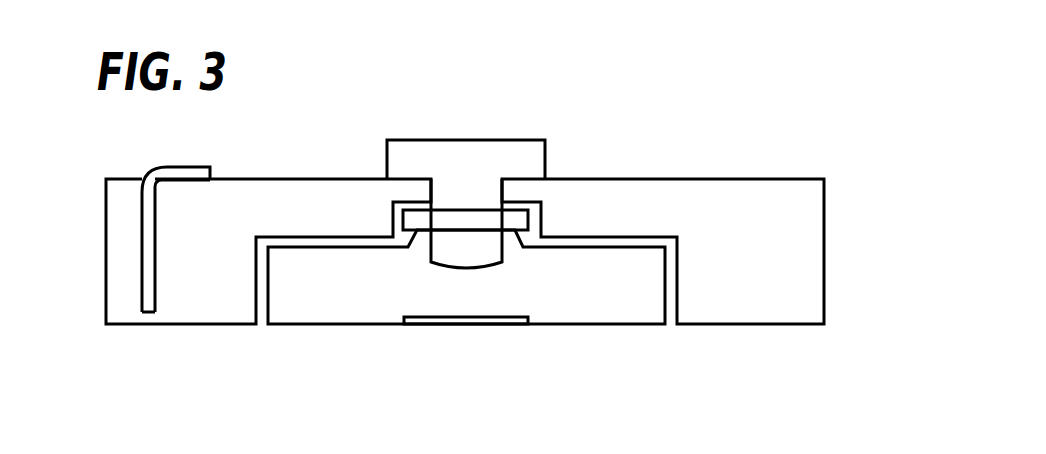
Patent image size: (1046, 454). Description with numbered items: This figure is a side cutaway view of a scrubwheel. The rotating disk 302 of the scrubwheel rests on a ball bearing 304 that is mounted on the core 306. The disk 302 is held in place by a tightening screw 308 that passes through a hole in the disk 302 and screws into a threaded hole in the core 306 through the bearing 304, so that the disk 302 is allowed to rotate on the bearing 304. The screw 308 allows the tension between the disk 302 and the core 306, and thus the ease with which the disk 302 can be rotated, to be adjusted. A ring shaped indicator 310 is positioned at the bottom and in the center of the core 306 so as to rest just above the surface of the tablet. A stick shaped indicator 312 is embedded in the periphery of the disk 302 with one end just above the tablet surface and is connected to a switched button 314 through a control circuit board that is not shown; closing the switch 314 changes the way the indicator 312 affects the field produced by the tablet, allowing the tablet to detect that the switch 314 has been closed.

The rotating disk 302 is at (785, 232).
The ball bearing 304 is at (422, 217).
The core 306 is at (608, 303).
The tightening screw 308 is at (523, 160).
The ring shaped indicator 310 is at (413, 324).
The stick shaped indicator 312 is at (145, 262).
The switched button 314 is at (180, 166).